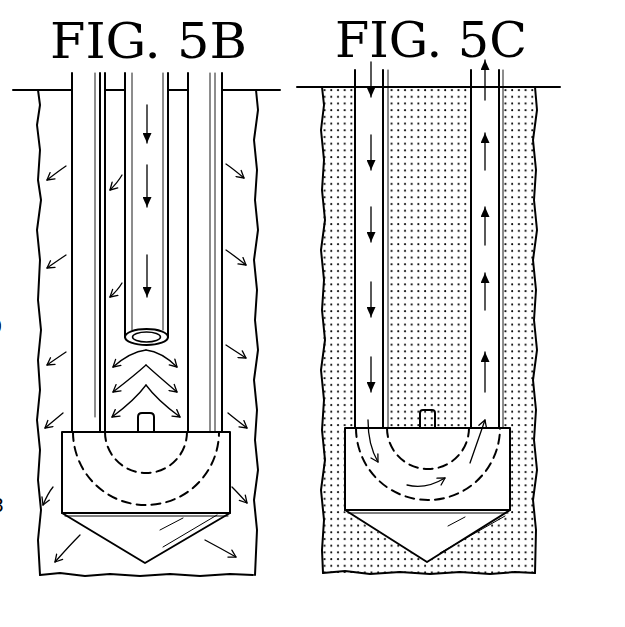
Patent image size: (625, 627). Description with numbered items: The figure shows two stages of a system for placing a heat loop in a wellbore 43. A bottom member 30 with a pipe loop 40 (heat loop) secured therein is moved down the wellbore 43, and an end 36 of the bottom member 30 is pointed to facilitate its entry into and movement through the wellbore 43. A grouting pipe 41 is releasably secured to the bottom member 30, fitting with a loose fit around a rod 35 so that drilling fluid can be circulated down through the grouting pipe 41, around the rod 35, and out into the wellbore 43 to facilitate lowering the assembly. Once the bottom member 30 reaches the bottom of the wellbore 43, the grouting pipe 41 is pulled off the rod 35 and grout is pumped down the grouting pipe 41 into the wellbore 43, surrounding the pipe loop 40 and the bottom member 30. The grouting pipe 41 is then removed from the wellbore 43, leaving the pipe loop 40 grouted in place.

In FIG. 5B, the bottom member 30 is at (230, 460).
In FIG. 5C, the bottom member 30 is at (512, 463).
In FIG. 5B, the rod 35 is at (137, 417).
In FIG. 5C, the rod 35 is at (425, 410).
In FIG. 5B, the end 36 is at (133, 537).
In FIG. 5C, the end 36 is at (413, 533).
In FIG. 5B, the pipe loop 40 is at (222, 208).
In FIG. 5C, the pipe loop 40 is at (502, 285).
In FIG. 5B, the grouting pipe 41 is at (167, 315).
In FIG. 5B, the wellbore 43 is at (197, 578).
In FIG. 5C, the wellbore 43 is at (320, 498).